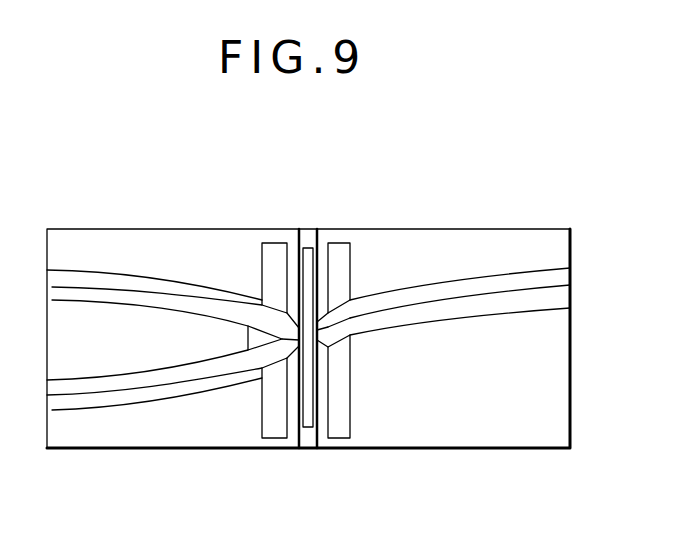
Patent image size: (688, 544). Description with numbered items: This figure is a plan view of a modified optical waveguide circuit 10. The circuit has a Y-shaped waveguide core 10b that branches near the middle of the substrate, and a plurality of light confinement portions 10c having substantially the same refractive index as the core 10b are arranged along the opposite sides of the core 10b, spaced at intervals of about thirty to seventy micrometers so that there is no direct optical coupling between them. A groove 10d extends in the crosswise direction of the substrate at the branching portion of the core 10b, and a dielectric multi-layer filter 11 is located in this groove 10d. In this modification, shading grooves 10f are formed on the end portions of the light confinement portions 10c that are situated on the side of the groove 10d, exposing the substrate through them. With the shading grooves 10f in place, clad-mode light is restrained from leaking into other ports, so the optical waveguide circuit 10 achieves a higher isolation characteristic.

The optical waveguide circuit 10 is at (384, 216).
The Y-shaped waveguide core 10b is at (157, 295).
The light confinement portions 10c is at (89, 270).
The groove 10d is at (308, 246).
The shading grooves 10f is at (278, 244).
The dielectric multi-layer filter 11 is at (307, 430).